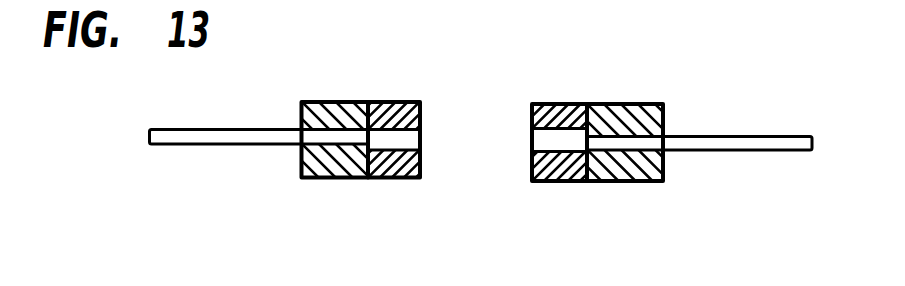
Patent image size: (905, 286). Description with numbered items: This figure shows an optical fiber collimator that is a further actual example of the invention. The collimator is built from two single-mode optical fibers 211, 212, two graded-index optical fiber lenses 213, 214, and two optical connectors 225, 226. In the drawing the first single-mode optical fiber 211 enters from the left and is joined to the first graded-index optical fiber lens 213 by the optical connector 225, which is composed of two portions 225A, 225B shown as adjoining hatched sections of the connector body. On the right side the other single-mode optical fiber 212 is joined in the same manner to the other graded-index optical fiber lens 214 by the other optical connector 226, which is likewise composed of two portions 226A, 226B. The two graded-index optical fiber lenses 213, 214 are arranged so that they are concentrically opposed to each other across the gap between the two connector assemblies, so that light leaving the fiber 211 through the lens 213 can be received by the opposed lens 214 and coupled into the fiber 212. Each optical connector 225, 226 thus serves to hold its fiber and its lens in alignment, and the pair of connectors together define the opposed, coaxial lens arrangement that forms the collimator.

The single-mode optical fiber 211 is at (237, 132).
The single-mode optical fiber 212 is at (732, 137).
The graded-index optical fiber lens 213 is at (415, 138).
The graded-index optical fiber lens 214 is at (537, 140).
The optical connector 225 is at (375, 173).
The portion of optical connector 225A is at (338, 173).
The portion of optical connector 225B is at (407, 148).
The optical connector 226 is at (580, 190).
The portion of optical connector 226A is at (620, 166).
The portion of optical connector 226B is at (541, 166).